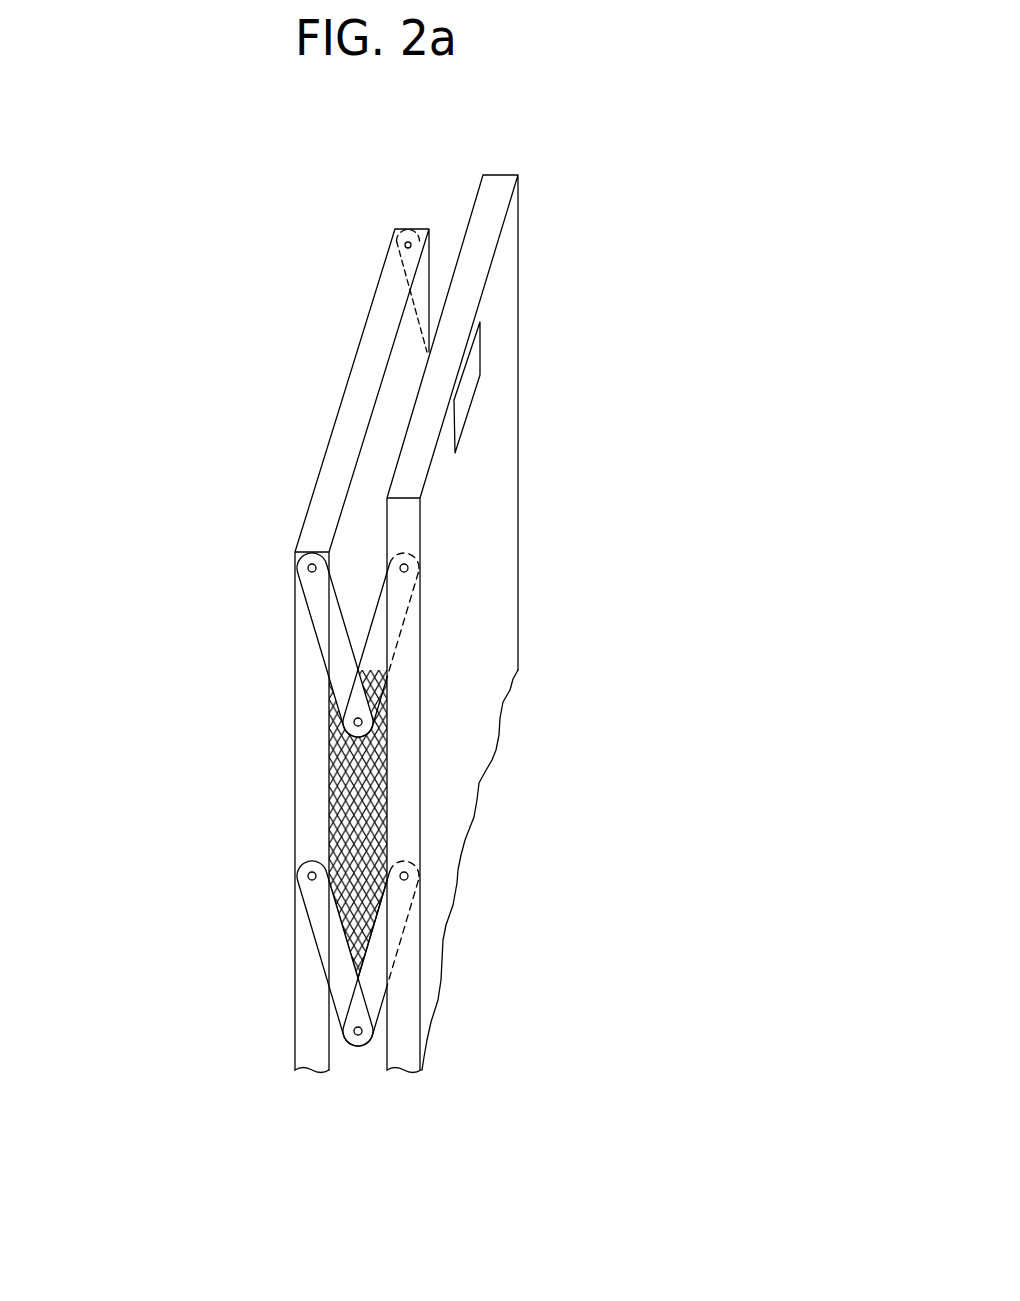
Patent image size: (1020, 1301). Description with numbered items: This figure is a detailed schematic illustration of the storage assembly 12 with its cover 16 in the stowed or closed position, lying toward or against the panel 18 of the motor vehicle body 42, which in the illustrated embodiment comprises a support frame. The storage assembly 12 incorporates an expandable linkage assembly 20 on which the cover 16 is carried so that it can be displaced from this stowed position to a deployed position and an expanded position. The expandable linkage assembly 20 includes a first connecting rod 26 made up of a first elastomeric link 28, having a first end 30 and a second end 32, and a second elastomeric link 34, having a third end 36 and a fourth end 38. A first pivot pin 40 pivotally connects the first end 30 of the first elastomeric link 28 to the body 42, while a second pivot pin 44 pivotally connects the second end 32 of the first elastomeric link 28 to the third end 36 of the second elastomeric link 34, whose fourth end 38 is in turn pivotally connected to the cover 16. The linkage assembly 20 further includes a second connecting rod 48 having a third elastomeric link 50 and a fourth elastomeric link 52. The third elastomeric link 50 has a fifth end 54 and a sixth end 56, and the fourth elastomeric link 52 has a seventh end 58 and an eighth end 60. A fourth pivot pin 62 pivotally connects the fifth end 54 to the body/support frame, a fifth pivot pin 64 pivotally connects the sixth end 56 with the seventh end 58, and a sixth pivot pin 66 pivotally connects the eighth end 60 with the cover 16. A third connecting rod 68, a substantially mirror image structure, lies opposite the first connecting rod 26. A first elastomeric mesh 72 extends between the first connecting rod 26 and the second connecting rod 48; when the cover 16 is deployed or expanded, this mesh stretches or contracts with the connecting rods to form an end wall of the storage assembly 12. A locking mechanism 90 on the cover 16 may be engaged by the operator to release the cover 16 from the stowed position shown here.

The storage assembly 12 is at (612, 196).
The cover 16 is at (518, 624).
The panel 18 is at (313, 596).
The expandable linkage assembly 20 is at (316, 687).
The first connecting rod 26 is at (376, 471).
The first elastomeric link 28 is at (335, 658).
The first end 30 is at (298, 552).
The second end 32 is at (345, 800).
The second elastomeric link 34 is at (378, 643).
The third end 36 is at (385, 740).
The fourth end 38 is at (415, 556).
The first pivot pin 40 is at (308, 569).
The body 42 is at (352, 726).
The second pivot pin 44 is at (408, 568).
The second connecting rod 48 is at (322, 1007).
The third elastomeric link 50 is at (340, 990).
The fourth elastomeric link 52 is at (375, 975).
The fifth end 54 is at (308, 872).
The sixth end 56 is at (361, 1046).
The seventh end 58 is at (317, 1103).
The eighth end 60 is at (413, 867).
The fourth pivot pin 62 is at (310, 884).
The fifth pivot pin 64 is at (347, 1025).
The sixth pivot pin 66 is at (410, 879).
The third connecting rod 68 is at (431, 292).
The first elastomeric mesh 72 is at (356, 802).
The locking mechanism 90 is at (467, 382).